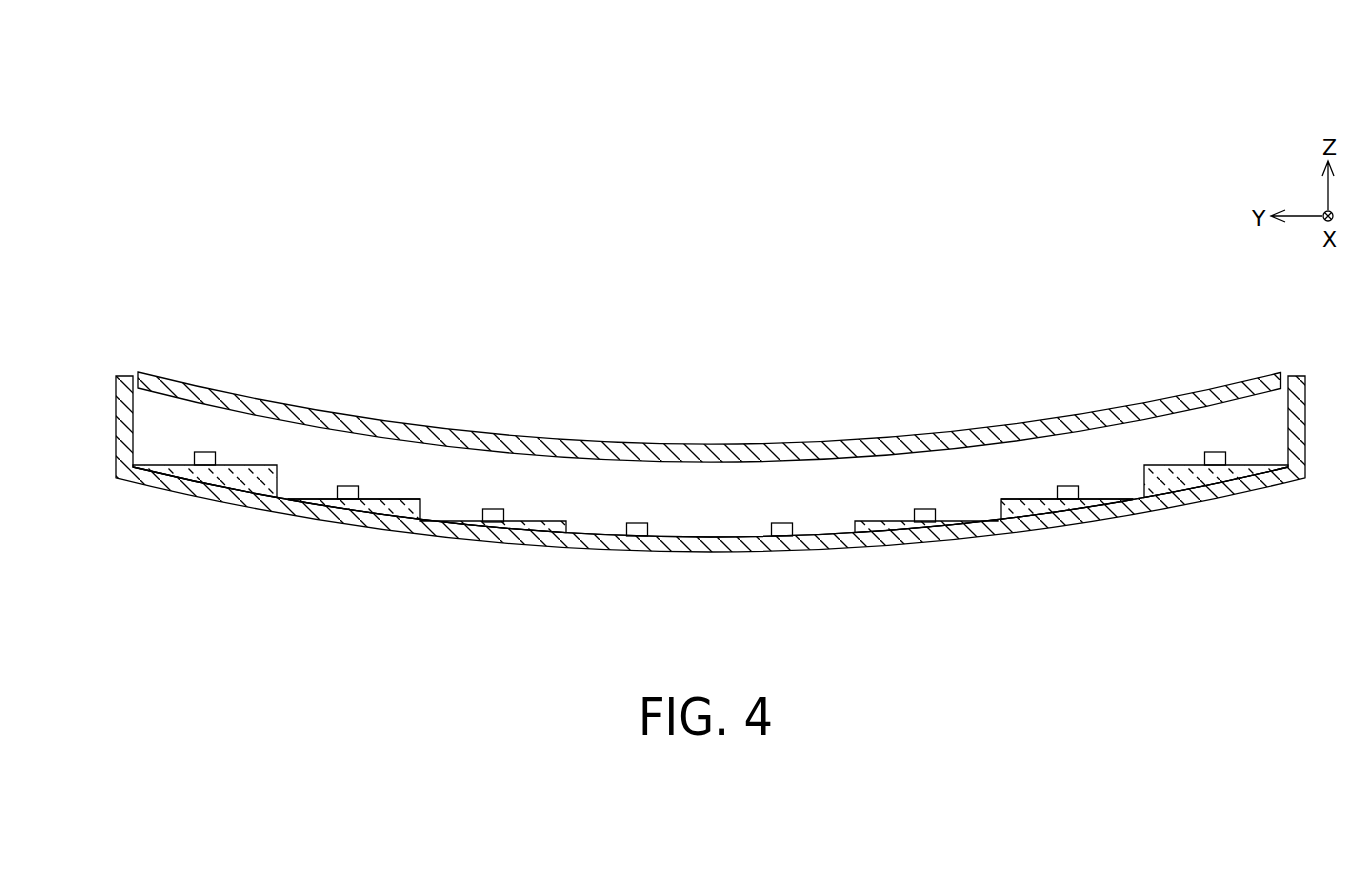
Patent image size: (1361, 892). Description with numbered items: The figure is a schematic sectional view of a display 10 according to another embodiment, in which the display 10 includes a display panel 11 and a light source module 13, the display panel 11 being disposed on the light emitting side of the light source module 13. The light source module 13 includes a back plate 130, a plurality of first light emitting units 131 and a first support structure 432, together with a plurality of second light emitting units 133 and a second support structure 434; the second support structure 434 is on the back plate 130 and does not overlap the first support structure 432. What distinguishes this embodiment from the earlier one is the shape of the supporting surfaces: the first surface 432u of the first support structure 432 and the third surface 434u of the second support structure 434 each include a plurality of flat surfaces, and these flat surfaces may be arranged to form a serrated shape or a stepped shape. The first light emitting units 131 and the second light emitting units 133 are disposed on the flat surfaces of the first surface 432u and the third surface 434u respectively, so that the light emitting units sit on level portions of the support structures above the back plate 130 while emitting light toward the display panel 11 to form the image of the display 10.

The display 10 is at (94, 285).
The display panel 11 is at (1198, 398).
The light source module 13 is at (1182, 528).
The back plate 130 is at (838, 547).
The first light emitting units 131 is at (925, 508).
The second light emitting units 133 is at (349, 486).
The first support structure 432 is at (1042, 512).
The first surface 432u is at (1023, 498).
The second support structure 434 is at (393, 508).
The third surface 434u is at (389, 497).